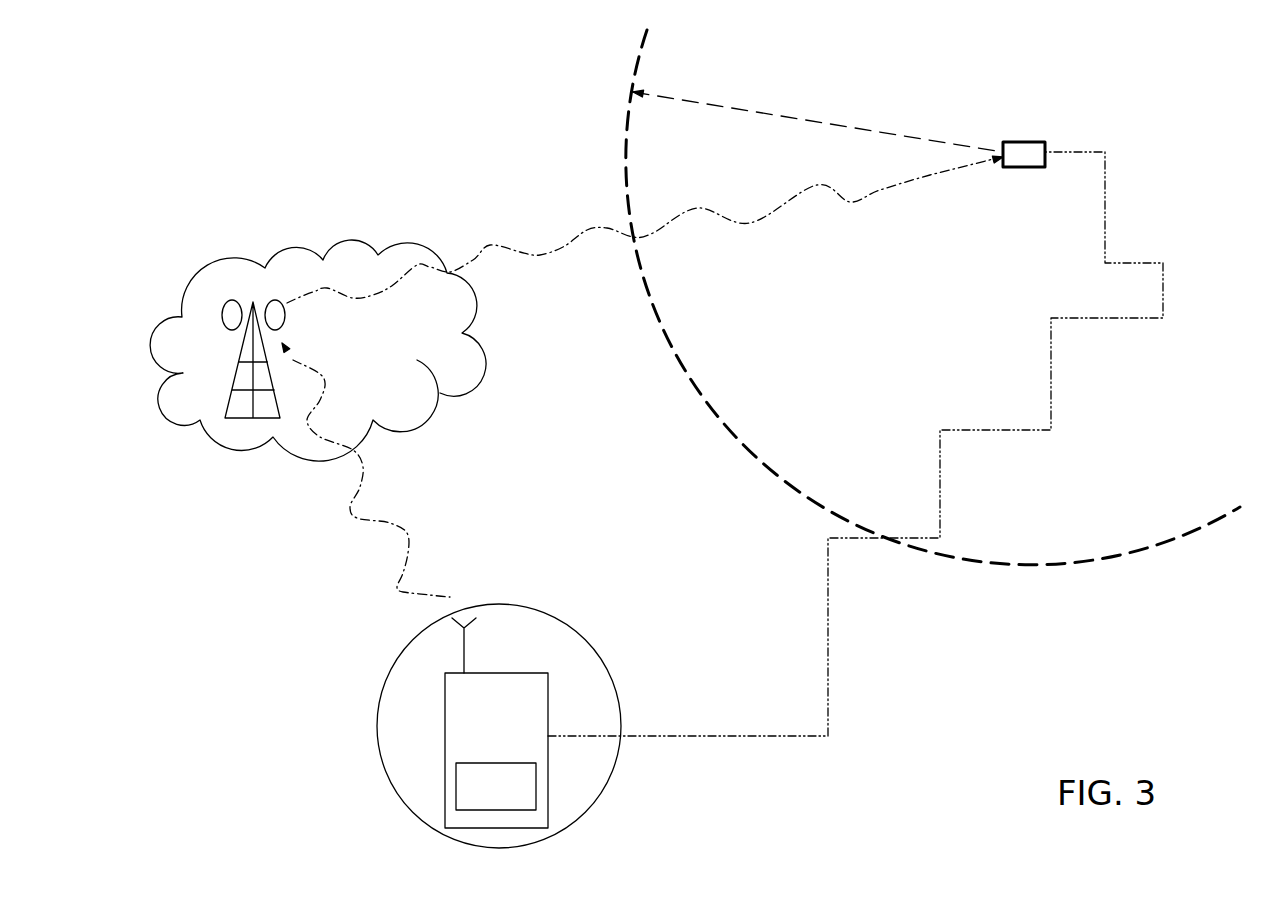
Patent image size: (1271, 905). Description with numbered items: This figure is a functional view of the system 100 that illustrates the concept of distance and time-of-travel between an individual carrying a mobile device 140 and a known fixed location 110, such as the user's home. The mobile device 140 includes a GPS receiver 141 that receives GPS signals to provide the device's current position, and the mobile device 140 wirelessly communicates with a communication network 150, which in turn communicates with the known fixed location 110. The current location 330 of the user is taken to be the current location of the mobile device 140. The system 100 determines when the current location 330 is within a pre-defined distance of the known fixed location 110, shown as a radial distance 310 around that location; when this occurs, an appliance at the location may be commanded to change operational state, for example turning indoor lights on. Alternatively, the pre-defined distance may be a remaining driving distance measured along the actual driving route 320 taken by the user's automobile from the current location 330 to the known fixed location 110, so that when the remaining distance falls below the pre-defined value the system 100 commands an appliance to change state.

The system 100 is at (300, 158).
The known fixed location 110 is at (1029, 142).
The mobile device 140 is at (494, 673).
The GPS receiver 141 is at (480, 765).
The communication network 150 is at (278, 444).
The radial distance 310 is at (767, 115).
The driving route 320 is at (983, 432).
The current location 330 is at (402, 652).